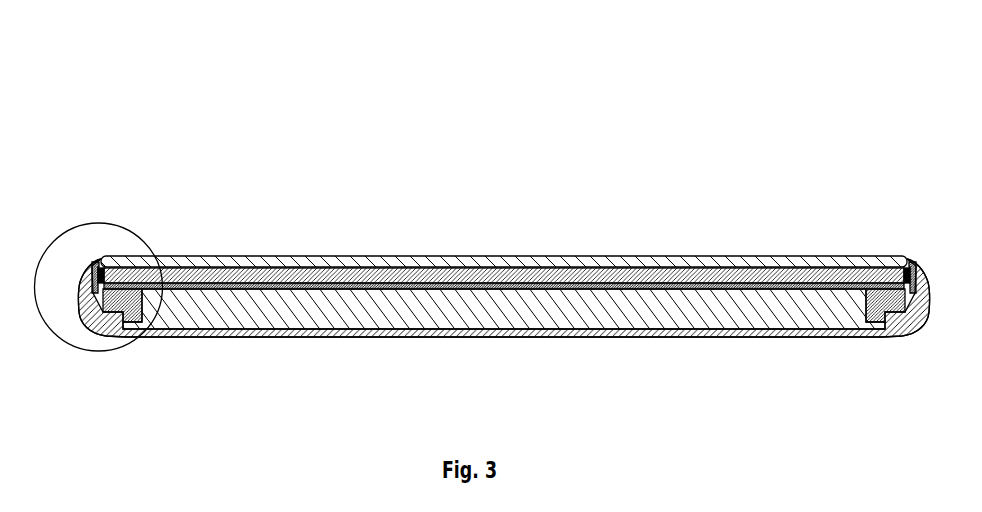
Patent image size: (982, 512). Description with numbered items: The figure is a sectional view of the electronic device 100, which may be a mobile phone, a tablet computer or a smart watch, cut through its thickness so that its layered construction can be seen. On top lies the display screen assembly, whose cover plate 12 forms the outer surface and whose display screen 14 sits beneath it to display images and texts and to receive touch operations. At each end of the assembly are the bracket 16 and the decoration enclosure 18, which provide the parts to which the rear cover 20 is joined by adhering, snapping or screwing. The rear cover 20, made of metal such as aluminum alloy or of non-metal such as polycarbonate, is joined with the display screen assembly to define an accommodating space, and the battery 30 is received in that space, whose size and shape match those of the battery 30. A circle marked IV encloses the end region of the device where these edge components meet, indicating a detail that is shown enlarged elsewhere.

The electronic device 100 is at (179, 73).
The cover plate 12 is at (402, 257).
The display screen 14 is at (176, 264).
The bracket 16 is at (100, 301).
The decoration enclosure 18 is at (93, 263).
The rear cover 20 is at (207, 315).
The battery 30 is at (318, 337).
The detail view circle IV is at (102, 222).